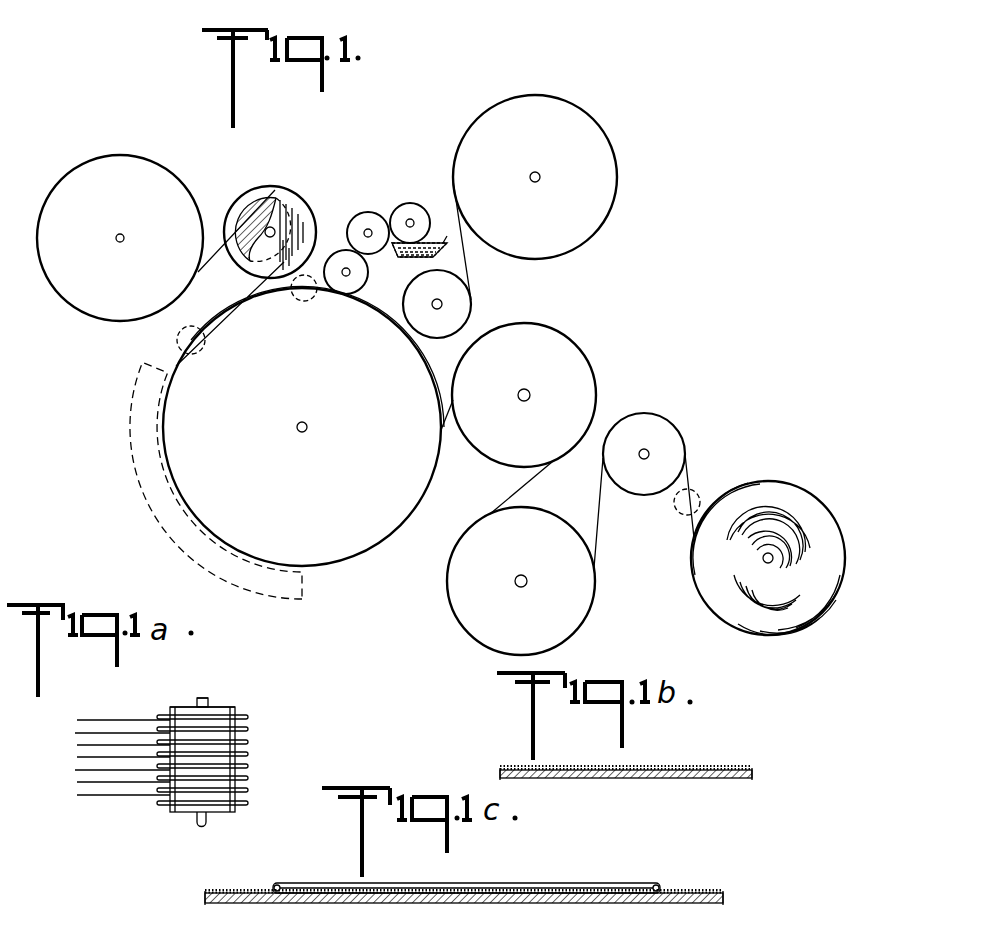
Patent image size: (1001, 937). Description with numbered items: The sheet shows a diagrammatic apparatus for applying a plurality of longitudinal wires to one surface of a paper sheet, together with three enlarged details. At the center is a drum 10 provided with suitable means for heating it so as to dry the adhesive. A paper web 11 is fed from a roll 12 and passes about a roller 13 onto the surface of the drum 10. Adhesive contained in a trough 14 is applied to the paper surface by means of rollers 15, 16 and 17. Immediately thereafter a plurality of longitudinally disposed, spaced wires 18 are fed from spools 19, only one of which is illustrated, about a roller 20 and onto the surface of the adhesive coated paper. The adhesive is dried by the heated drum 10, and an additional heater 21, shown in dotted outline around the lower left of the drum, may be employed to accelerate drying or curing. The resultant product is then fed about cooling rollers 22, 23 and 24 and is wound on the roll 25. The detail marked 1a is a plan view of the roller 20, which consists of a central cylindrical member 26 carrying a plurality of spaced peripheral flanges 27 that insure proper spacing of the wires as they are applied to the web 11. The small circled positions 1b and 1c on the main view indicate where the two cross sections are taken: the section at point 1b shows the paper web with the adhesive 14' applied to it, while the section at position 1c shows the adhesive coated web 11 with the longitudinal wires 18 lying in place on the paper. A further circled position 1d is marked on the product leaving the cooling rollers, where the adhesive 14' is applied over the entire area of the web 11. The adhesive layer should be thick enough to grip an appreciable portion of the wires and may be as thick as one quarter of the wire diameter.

In FIG. 1, the drum 10 is at (302, 477).
In FIG. 1, the paper web 11 is at (468, 276).
In FIG. 1B, the paper web 11 is at (715, 777).
In FIG. 1C, the paper web 11 is at (690, 906).
In FIG. 1, the roll 12 is at (597, 178).
In FIG. 1, the roller 13 is at (462, 313).
In FIG. 1, the trough 14 is at (419, 271).
In FIG. 1B, the adhesive 14' is at (641, 740).
In FIG. 1C, the adhesive 14' is at (464, 866).
In FIG. 1, the roller 15 is at (412, 204).
In FIG. 1, the roller 16 is at (365, 216).
In FIG. 1, the roller 17 is at (344, 290).
In FIG. 1, the wires 18 is at (212, 240).
In FIG. 1A, the wires 18 is at (80, 775).
In FIG. 1C, the wires 18 is at (606, 882).
In FIG. 1, the spools 19 is at (142, 166).
In FIG. 1, the roller 20 is at (306, 194).
In FIG. 1A, the roller 20 is at (170, 700).
In FIG. 1, the heater 21 is at (161, 522).
In FIG. 1, the cooling roller 22 is at (571, 350).
In FIG. 1, the cooling roller 23 is at (550, 526).
In FIG. 1, the cooling roller 24 is at (648, 418).
In FIG. 1, the roll 25 is at (776, 490).
In FIG. 1A, the central cylindrical member 26 is at (227, 708).
In FIG. 1A, the peripheral flanges 27 is at (248, 792).
In FIG. 1, the roller plan view 1a is at (272, 184).
In FIG. 1, the point 1b is at (302, 300).
In FIG. 1, the position 1c is at (176, 344).
In FIG. 1, the position 1d is at (700, 494).